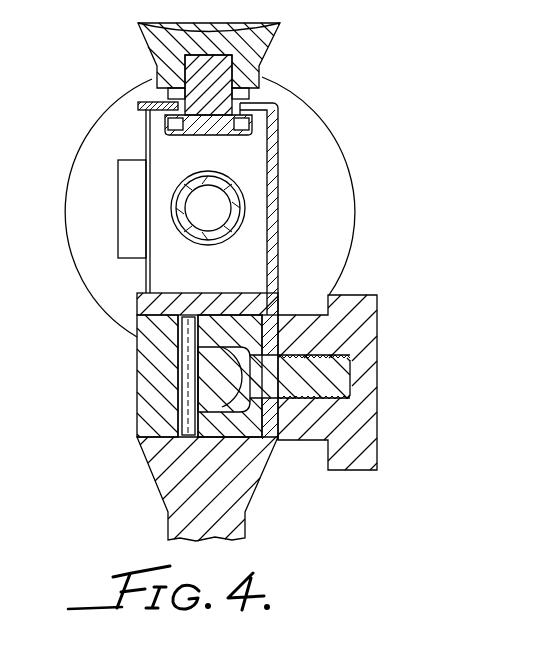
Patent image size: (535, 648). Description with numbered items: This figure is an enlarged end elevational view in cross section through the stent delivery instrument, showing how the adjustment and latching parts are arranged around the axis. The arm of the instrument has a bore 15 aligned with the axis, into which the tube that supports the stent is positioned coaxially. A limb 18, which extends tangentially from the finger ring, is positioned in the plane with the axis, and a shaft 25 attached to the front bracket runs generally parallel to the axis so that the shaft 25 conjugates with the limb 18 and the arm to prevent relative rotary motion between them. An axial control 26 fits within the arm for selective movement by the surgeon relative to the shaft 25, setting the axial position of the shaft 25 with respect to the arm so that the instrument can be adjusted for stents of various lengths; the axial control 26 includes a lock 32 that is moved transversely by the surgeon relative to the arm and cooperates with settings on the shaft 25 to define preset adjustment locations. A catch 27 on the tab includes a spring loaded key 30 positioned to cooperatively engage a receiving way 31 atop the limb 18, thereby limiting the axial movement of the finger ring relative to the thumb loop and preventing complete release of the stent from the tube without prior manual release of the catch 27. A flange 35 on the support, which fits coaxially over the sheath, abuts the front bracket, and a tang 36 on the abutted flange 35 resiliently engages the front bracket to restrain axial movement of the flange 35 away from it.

The bore 15 is at (211, 212).
The limb 18 is at (257, 279).
The shaft 25 is at (205, 383).
The axial control 26 is at (378, 331).
The catch 27 is at (281, 35).
The spring loaded key 30 is at (221, 136).
The receiving way 31 is at (171, 113).
The lock 32 is at (195, 345).
The flange 35 is at (86, 139).
The tang 36 is at (125, 204).